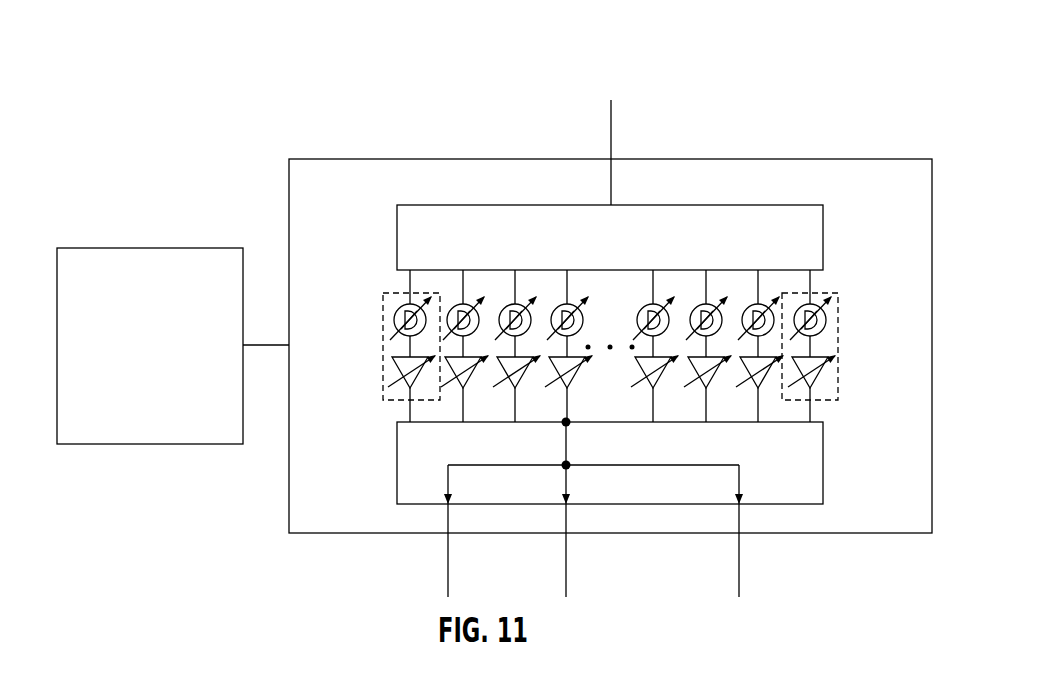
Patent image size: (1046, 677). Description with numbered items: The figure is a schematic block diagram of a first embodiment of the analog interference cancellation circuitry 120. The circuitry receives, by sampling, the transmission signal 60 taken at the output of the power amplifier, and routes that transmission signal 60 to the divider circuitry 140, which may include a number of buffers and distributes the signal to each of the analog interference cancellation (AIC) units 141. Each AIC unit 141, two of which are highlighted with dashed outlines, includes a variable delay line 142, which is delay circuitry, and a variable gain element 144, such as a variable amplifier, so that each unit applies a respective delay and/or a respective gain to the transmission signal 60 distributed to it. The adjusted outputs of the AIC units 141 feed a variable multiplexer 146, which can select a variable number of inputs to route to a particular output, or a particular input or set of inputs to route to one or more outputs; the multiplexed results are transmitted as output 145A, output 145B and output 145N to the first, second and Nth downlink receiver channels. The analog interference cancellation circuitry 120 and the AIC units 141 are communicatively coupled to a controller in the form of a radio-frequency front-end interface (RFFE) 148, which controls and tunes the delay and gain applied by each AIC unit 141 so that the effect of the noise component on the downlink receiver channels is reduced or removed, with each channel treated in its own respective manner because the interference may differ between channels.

The analog interference cancellation circuitry 120 is at (817, 123).
The radio-frequency front-end interface 148 is at (148, 247).
The transmission signal 60 is at (611, 133).
The divider circuitry 140 is at (823, 238).
The analog interference cancellation unit 141 is at (384, 352).
The variable delay line 142 is at (397, 307).
The variable gain element 144 is at (396, 367).
The variable multiplexer 146 is at (823, 452).
The output 145A is at (448, 575).
The output 145B is at (566, 575).
The output 145N is at (739, 575).